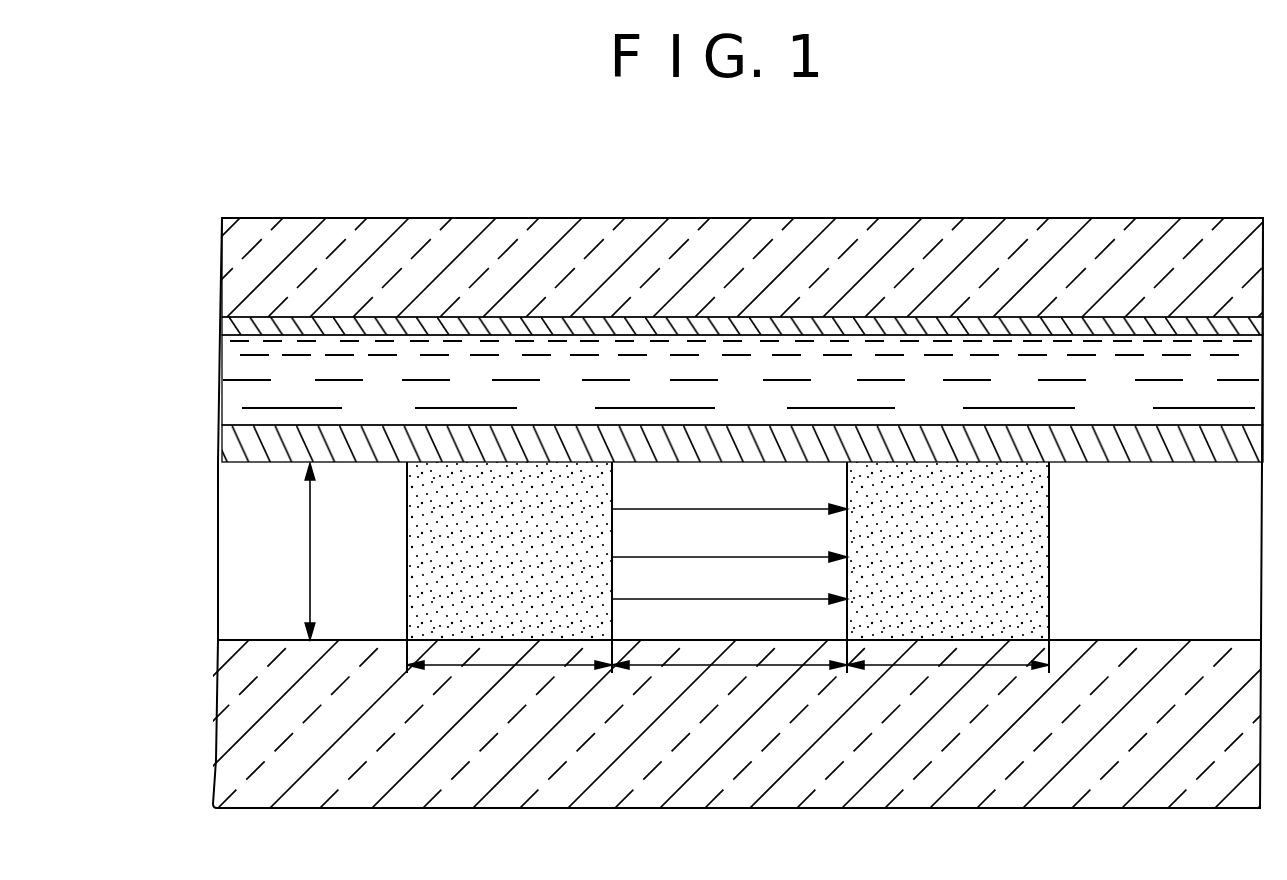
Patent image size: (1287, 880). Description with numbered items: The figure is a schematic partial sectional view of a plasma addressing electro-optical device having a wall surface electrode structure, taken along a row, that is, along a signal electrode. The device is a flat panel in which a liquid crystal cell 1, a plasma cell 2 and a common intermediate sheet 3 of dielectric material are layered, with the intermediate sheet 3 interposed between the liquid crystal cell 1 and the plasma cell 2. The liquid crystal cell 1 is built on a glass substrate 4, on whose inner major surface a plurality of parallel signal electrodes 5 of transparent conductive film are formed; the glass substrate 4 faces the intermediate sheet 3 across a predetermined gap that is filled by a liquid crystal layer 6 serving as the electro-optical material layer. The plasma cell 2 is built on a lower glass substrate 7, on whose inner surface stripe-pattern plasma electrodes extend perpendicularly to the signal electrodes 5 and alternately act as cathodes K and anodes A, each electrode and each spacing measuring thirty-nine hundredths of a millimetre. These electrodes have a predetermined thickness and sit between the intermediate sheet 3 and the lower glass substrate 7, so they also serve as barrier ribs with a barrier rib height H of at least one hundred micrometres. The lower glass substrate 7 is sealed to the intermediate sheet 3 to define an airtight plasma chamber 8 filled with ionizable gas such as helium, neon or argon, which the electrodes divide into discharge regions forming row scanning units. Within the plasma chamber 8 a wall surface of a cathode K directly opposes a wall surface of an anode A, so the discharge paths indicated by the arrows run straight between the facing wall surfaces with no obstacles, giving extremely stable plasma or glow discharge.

The liquid crystal cell 1 is at (714, 301).
The plasma cell 2 is at (684, 627).
The intermediate sheet 3 is at (229, 443).
The glass substrate 4 is at (750, 281).
The signal electrodes 5 is at (454, 323).
The liquid crystal layer 6 is at (1041, 356).
The lower glass substrate 7 is at (608, 757).
The plasma chamber 8 is at (746, 488).
The cathode K is at (420, 523).
The anode A is at (1040, 527).
The barrier rib height H is at (297, 551).